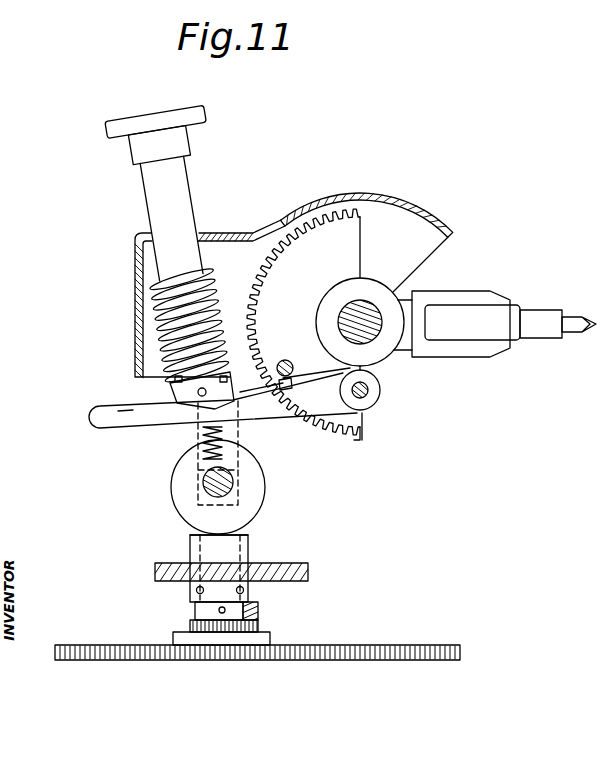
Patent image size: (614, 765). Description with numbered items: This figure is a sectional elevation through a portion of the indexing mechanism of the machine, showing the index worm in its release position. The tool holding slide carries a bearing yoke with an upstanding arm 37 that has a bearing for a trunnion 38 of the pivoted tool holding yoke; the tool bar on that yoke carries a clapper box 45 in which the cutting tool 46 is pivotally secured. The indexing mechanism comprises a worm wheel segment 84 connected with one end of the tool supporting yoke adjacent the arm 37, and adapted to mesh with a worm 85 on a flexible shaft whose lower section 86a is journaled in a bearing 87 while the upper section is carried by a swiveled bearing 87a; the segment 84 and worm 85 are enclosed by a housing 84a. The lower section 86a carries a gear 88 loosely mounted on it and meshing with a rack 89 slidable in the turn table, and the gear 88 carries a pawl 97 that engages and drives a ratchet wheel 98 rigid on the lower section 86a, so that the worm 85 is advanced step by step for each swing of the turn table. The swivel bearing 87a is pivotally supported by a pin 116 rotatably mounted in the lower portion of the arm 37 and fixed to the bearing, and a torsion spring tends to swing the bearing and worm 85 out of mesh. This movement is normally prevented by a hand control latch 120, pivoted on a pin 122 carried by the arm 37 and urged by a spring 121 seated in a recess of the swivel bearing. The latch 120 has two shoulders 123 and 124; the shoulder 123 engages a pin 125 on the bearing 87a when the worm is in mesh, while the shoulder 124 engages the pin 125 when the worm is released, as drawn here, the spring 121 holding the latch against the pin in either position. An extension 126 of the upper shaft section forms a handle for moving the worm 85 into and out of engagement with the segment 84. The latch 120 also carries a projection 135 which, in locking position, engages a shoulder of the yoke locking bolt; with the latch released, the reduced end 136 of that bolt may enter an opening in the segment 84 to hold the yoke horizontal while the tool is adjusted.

The upstanding arm 37 is at (308, 573).
The trunnion 38 is at (370, 307).
The clapper box 45 is at (468, 297).
The tool 46 is at (580, 317).
The worm wheel segment 84 is at (353, 247).
The housing 84a is at (330, 200).
The worm 85 is at (152, 298).
The lower section of flexible shaft 86a is at (258, 534).
The bearing 87 is at (250, 556).
The swiveled bearing 87a is at (203, 445).
The gear 88 is at (227, 656).
The rack 89 is at (156, 657).
The pawl 97 is at (258, 625).
The ratchet wheel 98 is at (193, 621).
The pin 116 is at (264, 471).
The hand control latch 120 is at (100, 431).
The spring 121 is at (185, 436).
The pin 122 is at (381, 389).
The shoulder 123 is at (250, 410).
The shoulder 124 is at (145, 411).
The pin 125 is at (227, 363).
The extension 126 is at (203, 168).
The projection 135 is at (287, 376).
The reduced end of bolt 136 is at (284, 359).